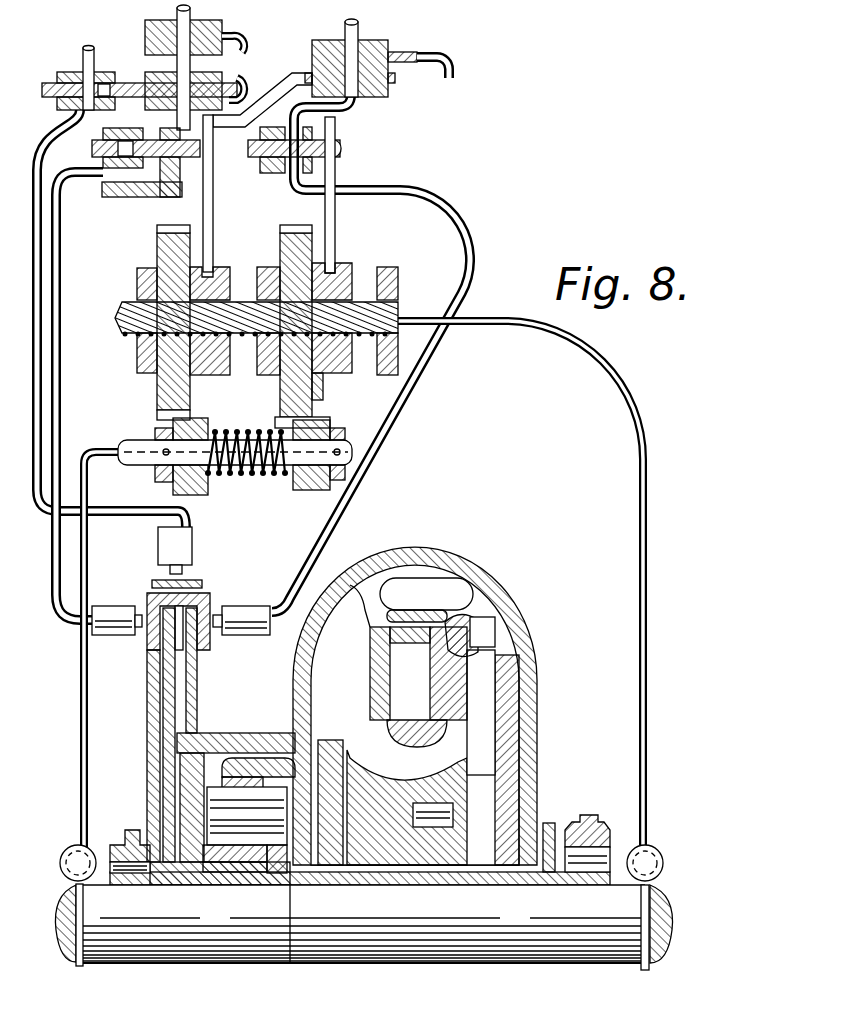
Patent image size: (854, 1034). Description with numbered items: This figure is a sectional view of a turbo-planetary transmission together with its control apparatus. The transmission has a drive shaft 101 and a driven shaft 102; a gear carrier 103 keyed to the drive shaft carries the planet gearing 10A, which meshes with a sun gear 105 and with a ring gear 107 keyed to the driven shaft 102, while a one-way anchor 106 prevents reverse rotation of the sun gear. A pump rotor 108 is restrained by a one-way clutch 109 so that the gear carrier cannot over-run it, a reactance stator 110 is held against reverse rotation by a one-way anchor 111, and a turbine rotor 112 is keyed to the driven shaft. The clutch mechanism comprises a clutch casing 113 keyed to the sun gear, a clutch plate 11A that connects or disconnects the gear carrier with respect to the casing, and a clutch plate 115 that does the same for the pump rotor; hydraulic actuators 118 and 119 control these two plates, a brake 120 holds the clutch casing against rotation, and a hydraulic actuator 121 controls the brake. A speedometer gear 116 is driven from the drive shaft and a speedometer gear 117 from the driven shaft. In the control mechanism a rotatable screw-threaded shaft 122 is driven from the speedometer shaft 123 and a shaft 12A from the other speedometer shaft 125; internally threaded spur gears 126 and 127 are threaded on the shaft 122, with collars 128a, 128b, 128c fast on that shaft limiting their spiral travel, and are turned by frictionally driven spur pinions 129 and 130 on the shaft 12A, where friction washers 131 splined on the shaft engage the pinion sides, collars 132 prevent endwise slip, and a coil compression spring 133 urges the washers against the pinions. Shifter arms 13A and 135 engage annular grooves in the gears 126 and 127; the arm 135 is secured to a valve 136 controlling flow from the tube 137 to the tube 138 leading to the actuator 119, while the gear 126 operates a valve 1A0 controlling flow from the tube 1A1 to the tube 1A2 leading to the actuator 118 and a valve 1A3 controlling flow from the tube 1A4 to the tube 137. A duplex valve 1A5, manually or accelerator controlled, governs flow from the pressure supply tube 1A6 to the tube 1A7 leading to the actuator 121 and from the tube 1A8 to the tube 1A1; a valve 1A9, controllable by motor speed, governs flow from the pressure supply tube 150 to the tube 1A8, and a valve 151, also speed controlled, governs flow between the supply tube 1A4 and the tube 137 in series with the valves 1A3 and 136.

The drive shaft 101 is at (196, 963).
The driven shaft 102 is at (510, 963).
The gear carrier 103 is at (220, 872).
The sun gear 105 is at (203, 885).
The one-way anchor 106 is at (130, 845).
The ring gear 107 is at (283, 757).
The pump rotor 108 is at (360, 675).
The one-way clutch 109 is at (175, 812).
The planet gearing 10A is at (247, 780).
The reactance stator 110 is at (495, 642).
The one-way anchor 111 is at (585, 850).
The turbine rotor 112 is at (437, 717).
The clutch casing 113 is at (208, 598).
The clutch plate 11A is at (166, 678).
The clutch plate 115 is at (198, 672).
The speedometer gear 116 is at (70, 852).
The speedometer gear 117 is at (666, 860).
The hydraulic actuator 118 is at (124, 598).
The hydraulic actuator 119 is at (245, 615).
The brake 120 is at (198, 580).
The hydraulic actuator 121 is at (180, 545).
The screw-threaded shaft 122 is at (392, 303).
The speedometer shaft 123 is at (650, 492).
The shaft 12A is at (135, 446).
The speedometer shaft 125 is at (80, 730).
The spur gear 126 is at (160, 242).
The spur gear 127 is at (282, 242).
The collar 128a is at (268, 376).
The collar 128b is at (387, 268).
The collar 128c is at (137, 283).
The spur pinion 129 is at (330, 424).
The spur pinion 130 is at (175, 490).
The friction washers 131 is at (290, 475).
The collars 132 is at (155, 475).
The coil compression spring 133 is at (272, 430).
The shifter arm 135 is at (336, 225).
The valve 136 is at (334, 145).
The tube 137 is at (355, 105).
The tube 138 is at (420, 193).
The valve 1A0 is at (66, 135).
The tube 1A1 is at (153, 114).
The tube 1A2 is at (63, 216).
The valve 1A3 is at (396, 80).
The pressure supply tube 1A4 is at (360, 32).
The duplex valve 1A5 is at (145, 78).
The pressure supply tube 1A6 is at (84, 62).
The tube 1A7 is at (42, 357).
The tube 1A8 is at (248, 62).
The valve 1A9 is at (242, 36).
The shifter arm 13A is at (214, 194).
The pressure supply tube 150 is at (176, 12).
The valve 151 is at (450, 62).